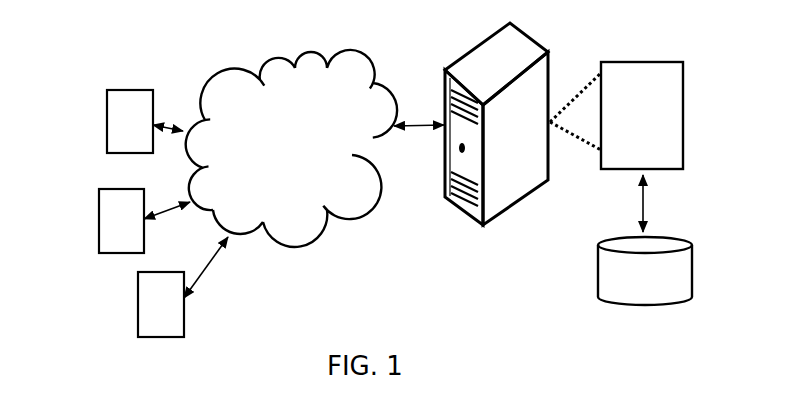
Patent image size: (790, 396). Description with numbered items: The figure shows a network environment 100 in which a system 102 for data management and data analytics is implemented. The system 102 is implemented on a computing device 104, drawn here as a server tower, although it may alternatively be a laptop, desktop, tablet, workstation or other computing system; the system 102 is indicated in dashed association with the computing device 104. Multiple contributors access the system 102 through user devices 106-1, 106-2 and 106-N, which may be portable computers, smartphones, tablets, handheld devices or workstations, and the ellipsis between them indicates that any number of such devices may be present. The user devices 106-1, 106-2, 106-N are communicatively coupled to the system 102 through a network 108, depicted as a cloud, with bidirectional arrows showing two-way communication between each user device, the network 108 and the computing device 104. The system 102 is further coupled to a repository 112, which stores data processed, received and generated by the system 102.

The network environment 100 is at (388, 280).
The system 102 is at (625, 62).
The computing device 104 is at (545, 52).
The user device 106-1 is at (128, 90).
The user device 106-2 is at (120, 253).
The user device 106-N is at (160, 337).
The network 108 is at (298, 156).
The repository 112 is at (598, 268).